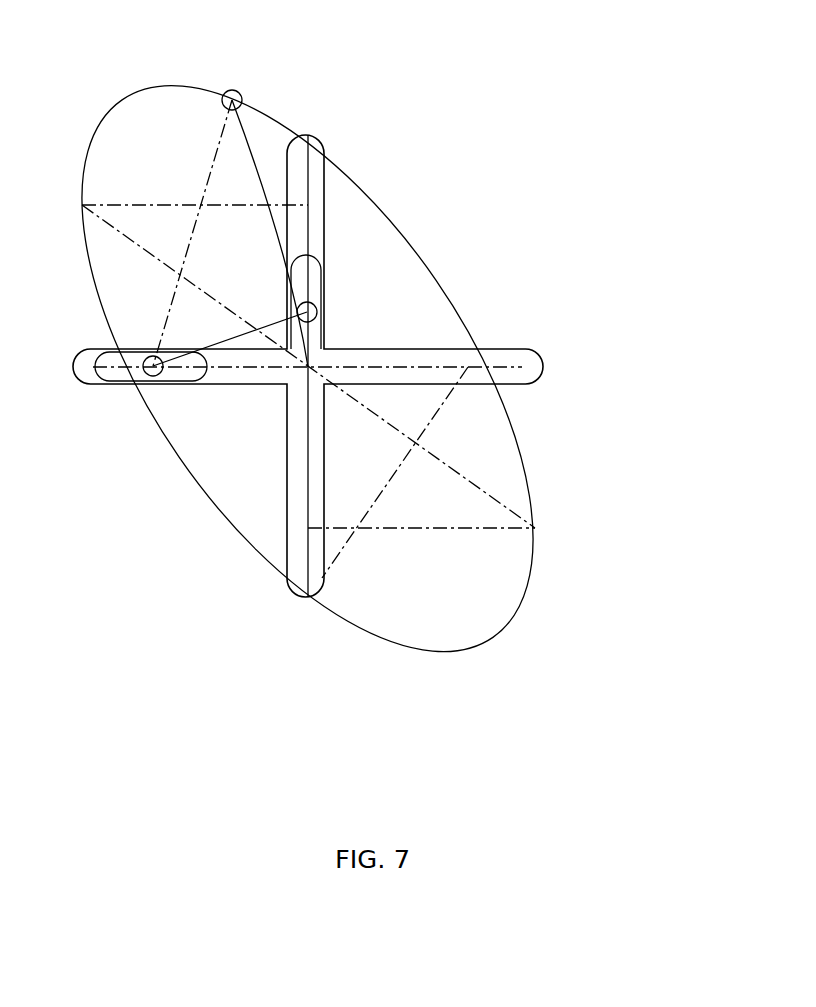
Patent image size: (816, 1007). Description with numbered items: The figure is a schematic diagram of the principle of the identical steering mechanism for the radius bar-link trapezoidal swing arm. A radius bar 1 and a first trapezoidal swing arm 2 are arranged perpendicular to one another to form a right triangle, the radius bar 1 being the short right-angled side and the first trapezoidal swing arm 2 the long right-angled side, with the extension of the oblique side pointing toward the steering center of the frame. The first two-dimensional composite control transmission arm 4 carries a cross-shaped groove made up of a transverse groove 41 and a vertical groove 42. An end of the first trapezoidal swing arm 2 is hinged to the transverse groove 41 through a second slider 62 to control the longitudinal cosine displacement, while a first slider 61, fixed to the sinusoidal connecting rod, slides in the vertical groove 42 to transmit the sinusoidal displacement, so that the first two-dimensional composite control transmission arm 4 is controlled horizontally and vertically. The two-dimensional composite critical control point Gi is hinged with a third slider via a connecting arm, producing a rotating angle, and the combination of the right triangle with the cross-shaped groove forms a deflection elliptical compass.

The radius bar 1 is at (250, 148).
The first trapezoidal swing arm 2 is at (287, 350).
The first two-dimensional composite control transmission arm 4 is at (391, 267).
The transverse groove 41 is at (520, 347).
The vertical groove 42 is at (317, 235).
The first slider 61 is at (308, 367).
The second slider 62 is at (152, 385).
The critical control point Gi is at (308, 367).